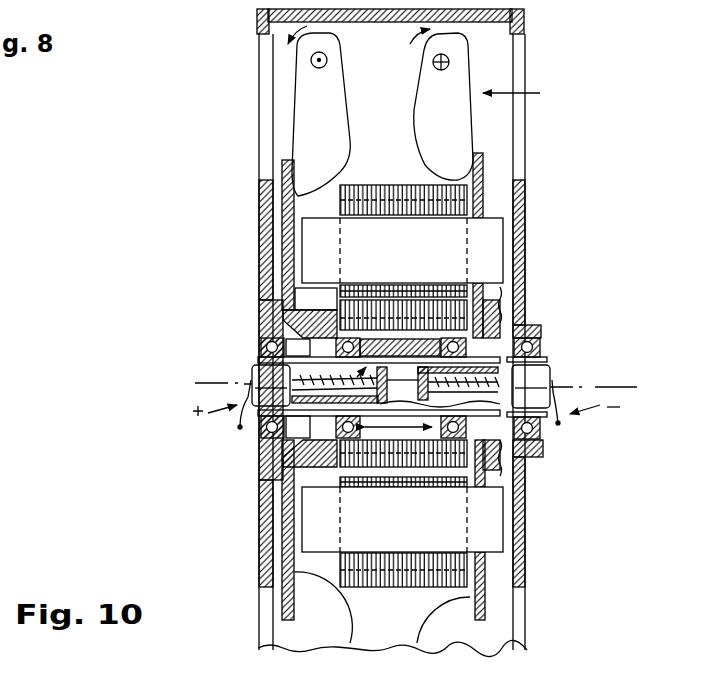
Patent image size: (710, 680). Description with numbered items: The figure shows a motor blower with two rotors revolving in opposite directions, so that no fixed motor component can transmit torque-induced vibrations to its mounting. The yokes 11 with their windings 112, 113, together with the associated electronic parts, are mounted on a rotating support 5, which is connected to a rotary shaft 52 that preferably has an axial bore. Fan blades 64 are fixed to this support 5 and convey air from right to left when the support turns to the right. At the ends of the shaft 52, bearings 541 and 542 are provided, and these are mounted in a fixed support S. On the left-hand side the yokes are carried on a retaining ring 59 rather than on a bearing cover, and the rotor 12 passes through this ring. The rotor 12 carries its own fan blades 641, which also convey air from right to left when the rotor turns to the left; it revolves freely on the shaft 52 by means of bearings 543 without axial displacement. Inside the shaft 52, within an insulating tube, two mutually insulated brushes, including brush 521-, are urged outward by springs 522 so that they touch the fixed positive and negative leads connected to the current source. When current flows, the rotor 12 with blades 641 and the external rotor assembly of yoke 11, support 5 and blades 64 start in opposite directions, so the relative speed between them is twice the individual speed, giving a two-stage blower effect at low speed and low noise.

The support 5 is at (483, 187).
The yoke 11 is at (397, 204).
The rotor 12 is at (333, 474).
The motor or pump shaft 52 is at (252, 355).
The retaining ring 59 is at (322, 290).
The fan blades 64 is at (428, 97).
The winding 112 is at (485, 246).
The winding 113 is at (483, 262).
The springs 522 is at (427, 282).
The bearing 541 is at (255, 345).
The bearing 542 is at (542, 343).
The bearings 543 is at (380, 442).
The fan blades 641 is at (337, 87).
The brush 521- is at (536, 377).
The support S is at (267, 537).